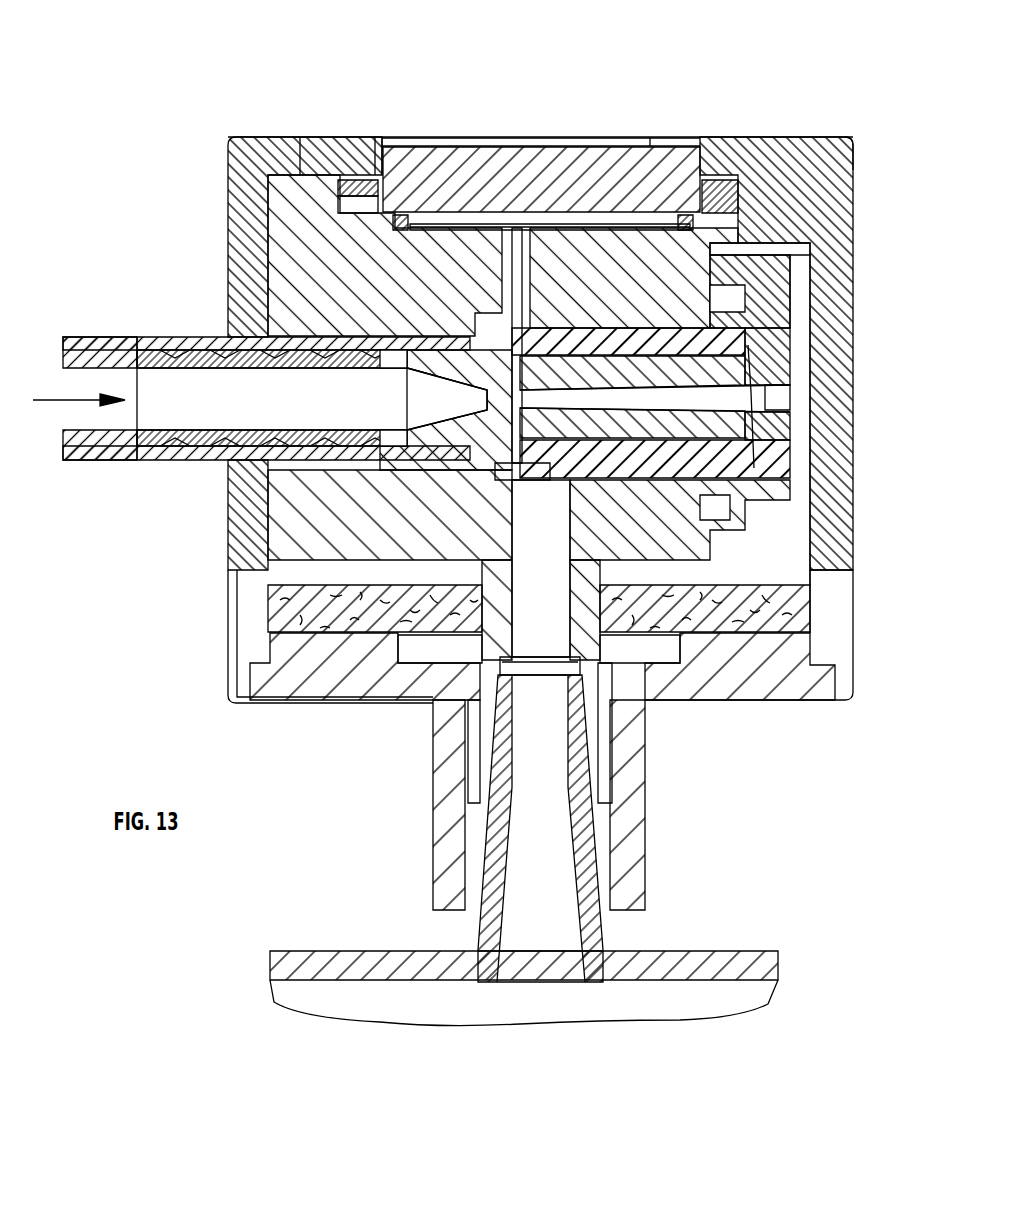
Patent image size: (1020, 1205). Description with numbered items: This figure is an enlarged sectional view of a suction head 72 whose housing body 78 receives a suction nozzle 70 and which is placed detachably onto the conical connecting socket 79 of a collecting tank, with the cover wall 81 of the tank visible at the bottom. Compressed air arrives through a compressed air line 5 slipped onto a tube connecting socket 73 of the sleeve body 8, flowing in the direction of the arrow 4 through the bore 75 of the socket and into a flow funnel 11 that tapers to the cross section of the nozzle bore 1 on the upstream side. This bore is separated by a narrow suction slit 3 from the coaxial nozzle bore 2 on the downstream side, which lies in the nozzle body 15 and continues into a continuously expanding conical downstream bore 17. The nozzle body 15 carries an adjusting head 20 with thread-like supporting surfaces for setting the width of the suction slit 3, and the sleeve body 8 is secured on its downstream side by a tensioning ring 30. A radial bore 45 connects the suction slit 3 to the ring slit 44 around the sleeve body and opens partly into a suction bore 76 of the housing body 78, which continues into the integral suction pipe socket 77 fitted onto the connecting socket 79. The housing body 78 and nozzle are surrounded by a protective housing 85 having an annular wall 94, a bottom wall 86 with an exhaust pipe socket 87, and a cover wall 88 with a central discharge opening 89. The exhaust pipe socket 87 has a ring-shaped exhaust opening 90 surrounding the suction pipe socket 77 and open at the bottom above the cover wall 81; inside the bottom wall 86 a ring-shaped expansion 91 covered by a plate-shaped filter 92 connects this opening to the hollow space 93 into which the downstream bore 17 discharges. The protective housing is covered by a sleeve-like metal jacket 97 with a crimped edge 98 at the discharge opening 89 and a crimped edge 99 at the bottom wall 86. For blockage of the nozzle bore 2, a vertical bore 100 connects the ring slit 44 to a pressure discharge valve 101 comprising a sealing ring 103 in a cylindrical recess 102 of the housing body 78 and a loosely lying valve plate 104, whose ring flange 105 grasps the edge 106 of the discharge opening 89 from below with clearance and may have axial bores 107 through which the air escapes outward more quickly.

The nozzle bore on the upstream side 1 is at (492, 400).
The nozzle bore on the downstream side 2 is at (568, 395).
The suction slit 3 is at (520, 395).
The arrow 4 is at (42, 402).
The compressed air line 5 is at (106, 344).
The sleeve body 8 is at (745, 467).
The flow funnel 11 is at (412, 400).
The nozzle body 15 is at (745, 427).
The downstream bore 17 is at (740, 395).
The adjusting head 20 is at (775, 355).
The tensioning ring 30 is at (800, 300).
The ring slit 44 is at (505, 300).
The radial bore 45 is at (480, 435).
The suction nozzle 70 is at (470, 425).
The suction head 72 is at (262, 112).
The tube connecting socket 73 is at (190, 345).
The bore of the tube connecting socket 75 is at (225, 412).
The suction bore 76 is at (520, 662).
The suction pipe socket 77 is at (595, 727).
The housing body 78 is at (300, 502).
The conical connecting socket 79 is at (600, 937).
The cover wall 81 is at (330, 962).
The protective housing 85 is at (835, 607).
The bottom wall 86 is at (410, 692).
The exhaust pipe socket 87 is at (640, 857).
The cover wall 88 is at (752, 150).
The discharge opening 89 is at (658, 140).
The exhaust opening 90 is at (470, 764).
The ring-shaped expansion 91 is at (665, 652).
The filter 92 is at (280, 602).
The hollow space 93 is at (780, 562).
The annular wall 94 is at (835, 274).
The metal jacket 97 is at (858, 160).
The crimped edge 98 is at (382, 140).
The crimped edge 99 is at (290, 702).
The vertical bore 100 is at (552, 240).
The pressure discharge valve 101 is at (452, 120).
The cylindrical recess 102 is at (612, 226).
The sealing ring 103 is at (735, 200).
The valve plate 104 is at (530, 150).
The ring flange 105 is at (340, 192).
The edge 106 is at (370, 152).
The axial bores 107 is at (350, 208).